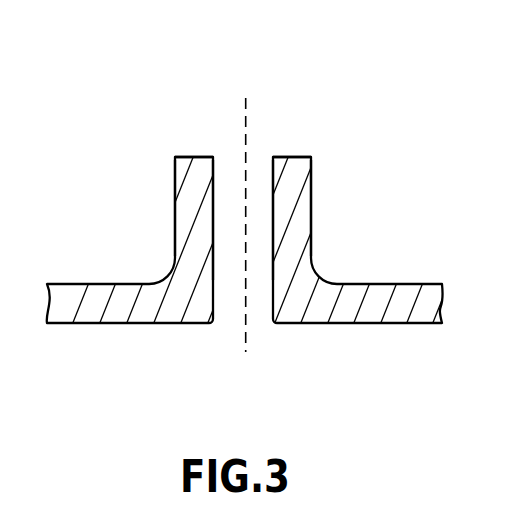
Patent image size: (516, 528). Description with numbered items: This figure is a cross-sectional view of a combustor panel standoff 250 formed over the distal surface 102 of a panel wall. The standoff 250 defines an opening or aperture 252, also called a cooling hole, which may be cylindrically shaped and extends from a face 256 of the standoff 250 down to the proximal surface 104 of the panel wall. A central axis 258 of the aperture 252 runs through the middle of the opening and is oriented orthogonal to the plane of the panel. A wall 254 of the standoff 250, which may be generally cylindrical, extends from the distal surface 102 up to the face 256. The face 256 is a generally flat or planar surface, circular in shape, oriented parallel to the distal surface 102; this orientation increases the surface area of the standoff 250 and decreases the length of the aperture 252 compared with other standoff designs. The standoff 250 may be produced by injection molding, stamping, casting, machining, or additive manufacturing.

The distal surface 102 is at (70, 283).
The proximal surface 104 is at (362, 322).
The standoff 250 is at (155, 114).
The aperture 252 is at (235, 338).
The wall 254 is at (187, 216).
The face 256 is at (193, 157).
The central axis 258 is at (247, 95).